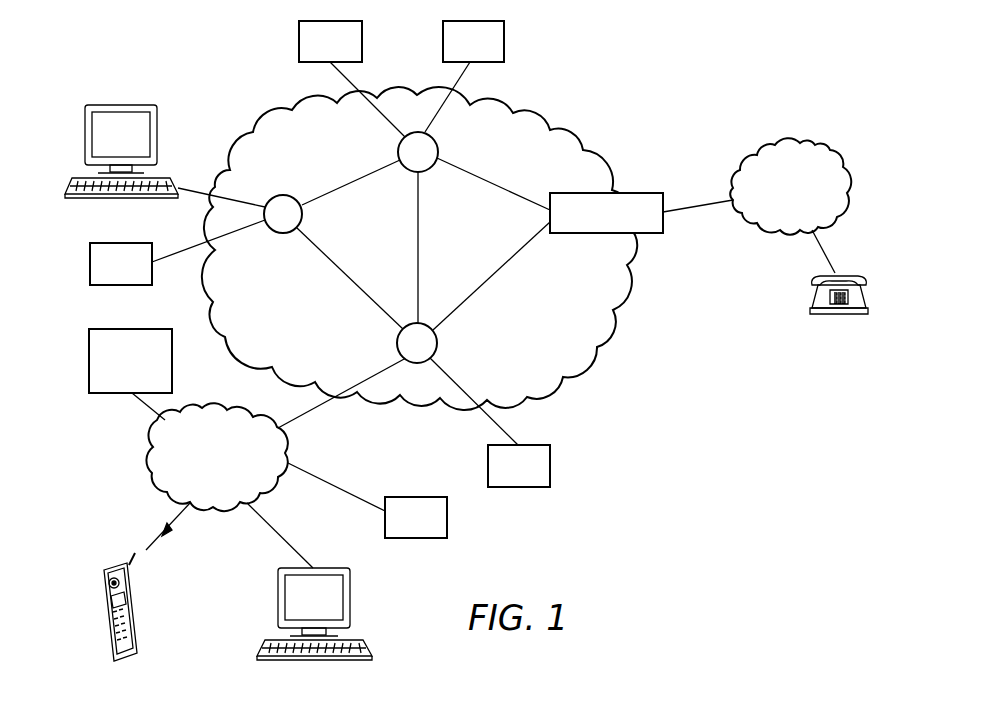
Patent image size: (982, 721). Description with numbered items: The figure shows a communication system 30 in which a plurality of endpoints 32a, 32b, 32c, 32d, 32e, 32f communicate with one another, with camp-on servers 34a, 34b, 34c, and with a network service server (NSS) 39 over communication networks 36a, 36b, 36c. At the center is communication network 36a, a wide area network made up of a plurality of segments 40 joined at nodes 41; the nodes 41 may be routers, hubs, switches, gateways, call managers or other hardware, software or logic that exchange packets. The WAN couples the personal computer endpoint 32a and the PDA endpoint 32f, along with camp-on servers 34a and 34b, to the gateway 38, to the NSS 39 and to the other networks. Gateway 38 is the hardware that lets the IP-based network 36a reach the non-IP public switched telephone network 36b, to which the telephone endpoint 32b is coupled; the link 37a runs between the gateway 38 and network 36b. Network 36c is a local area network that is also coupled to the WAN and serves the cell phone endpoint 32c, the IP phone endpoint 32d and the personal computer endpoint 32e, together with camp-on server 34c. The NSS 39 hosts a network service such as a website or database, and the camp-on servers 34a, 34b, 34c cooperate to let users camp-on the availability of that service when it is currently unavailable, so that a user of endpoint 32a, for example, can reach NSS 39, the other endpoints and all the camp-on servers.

The communication system 30 is at (652, 424).
The endpoint 32a is at (86, 138).
The endpoint 32b is at (840, 315).
The endpoint 32c is at (104, 603).
The endpoint 32d is at (89, 360).
The endpoint 32e is at (350, 602).
The endpoint 32f is at (299, 37).
The camp-on server 34a is at (504, 36).
The camp-on server 34b is at (90, 258).
The camp-on server 34c is at (447, 518).
The communication network 36a is at (265, 335).
The communication network 36b is at (769, 199).
The communication network 36c is at (150, 460).
The link 37a is at (696, 206).
The gateway 38 is at (584, 234).
The network service server 39 is at (550, 466).
The segments 40 is at (178, 258).
The nodes 41 is at (282, 196).